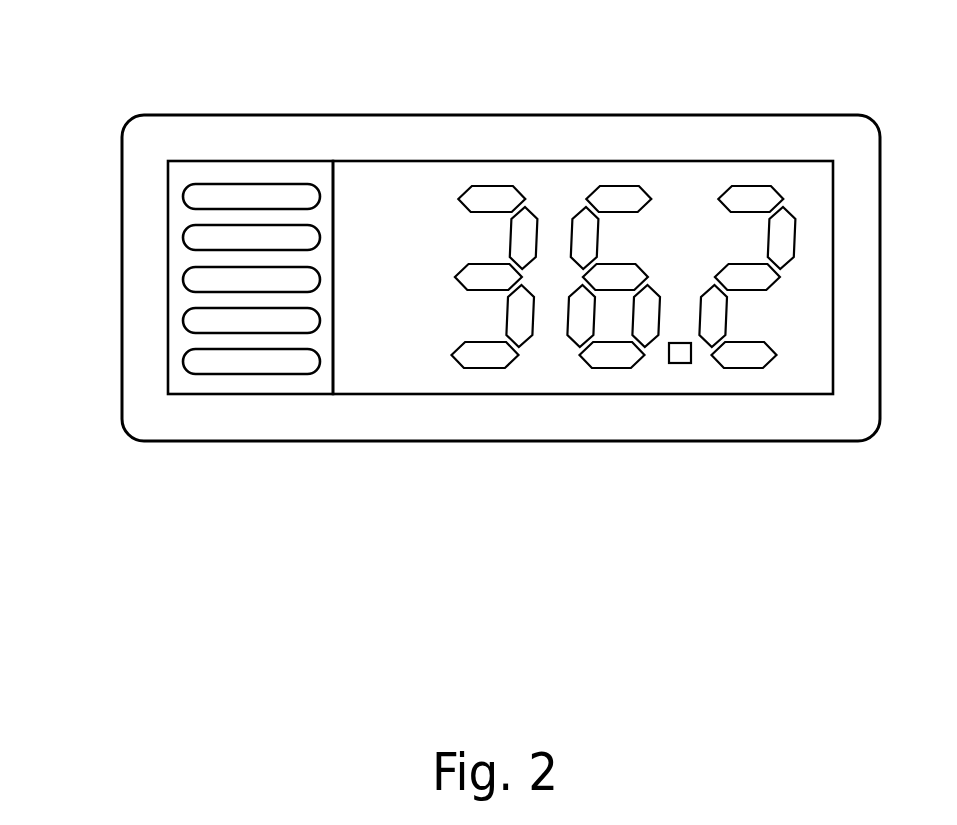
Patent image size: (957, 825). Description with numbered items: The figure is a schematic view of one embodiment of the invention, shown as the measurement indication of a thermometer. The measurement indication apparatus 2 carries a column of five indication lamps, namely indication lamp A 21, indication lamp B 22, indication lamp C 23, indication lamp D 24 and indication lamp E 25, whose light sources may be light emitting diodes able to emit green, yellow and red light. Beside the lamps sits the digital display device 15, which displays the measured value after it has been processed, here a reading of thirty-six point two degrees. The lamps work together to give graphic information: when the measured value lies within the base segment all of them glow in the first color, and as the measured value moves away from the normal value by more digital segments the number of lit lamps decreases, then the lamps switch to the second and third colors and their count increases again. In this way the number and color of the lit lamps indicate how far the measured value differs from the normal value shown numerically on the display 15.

The measurement indication apparatus 2 is at (282, 387).
The digital display device 15 is at (408, 372).
The indication lamp A 21 is at (220, 377).
The indication lamp B 22 is at (196, 316).
The indication lamp C 23 is at (195, 281).
The indication lamp D 24 is at (197, 238).
The indication lamp E 25 is at (259, 184).